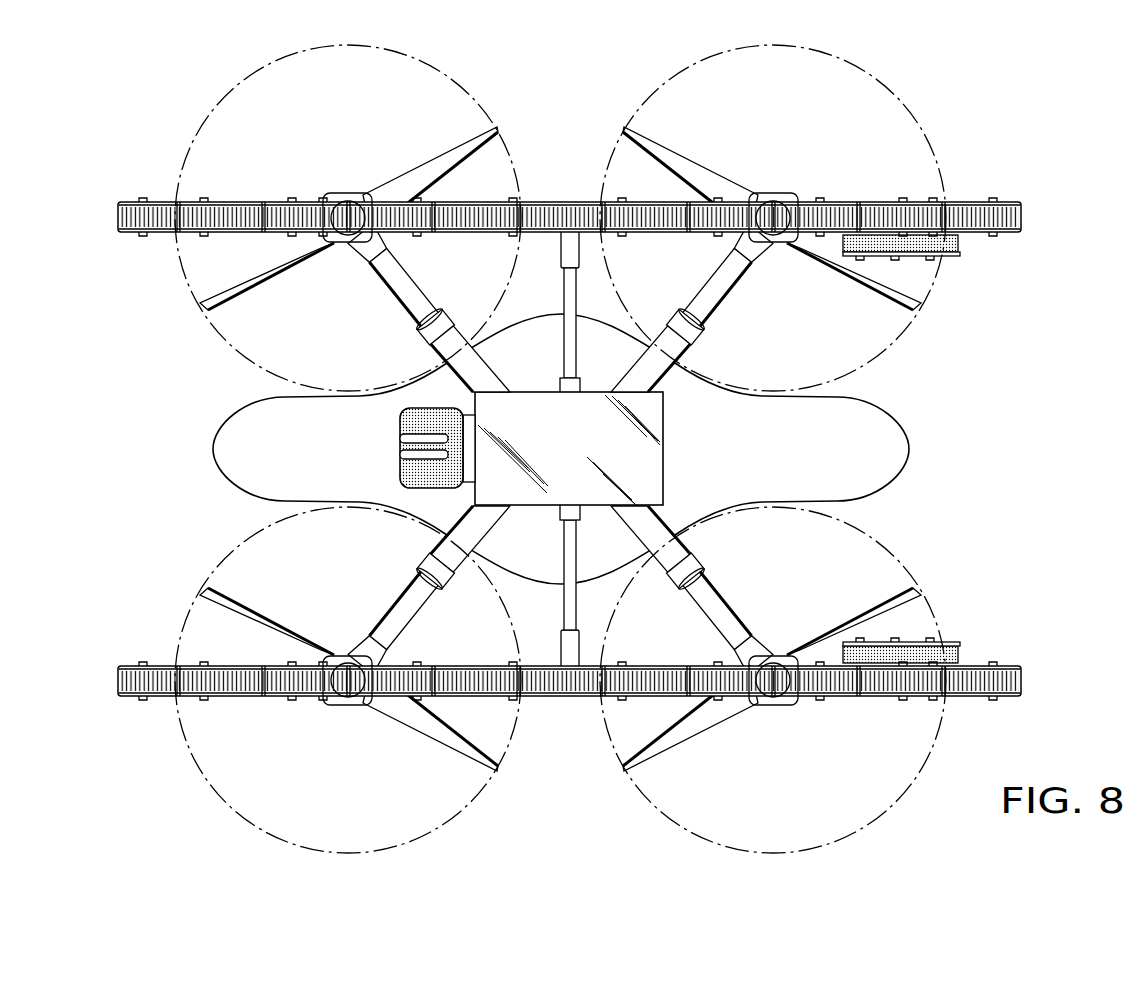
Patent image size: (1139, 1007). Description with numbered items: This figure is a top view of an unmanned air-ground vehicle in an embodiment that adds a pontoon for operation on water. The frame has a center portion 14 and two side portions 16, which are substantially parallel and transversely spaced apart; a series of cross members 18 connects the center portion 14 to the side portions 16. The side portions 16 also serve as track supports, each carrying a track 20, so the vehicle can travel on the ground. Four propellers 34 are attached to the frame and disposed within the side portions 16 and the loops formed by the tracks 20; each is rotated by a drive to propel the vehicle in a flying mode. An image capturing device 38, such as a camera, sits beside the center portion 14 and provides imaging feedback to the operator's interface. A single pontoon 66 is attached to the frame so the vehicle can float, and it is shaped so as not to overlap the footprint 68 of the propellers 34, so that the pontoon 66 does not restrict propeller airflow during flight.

The center portion 14 is at (578, 458).
The side portion 16 is at (592, 196).
The cross member 18 is at (432, 347).
The track 20 is at (1023, 210).
The propeller 34 is at (244, 296).
The image capturing device 38 is at (408, 412).
The pontoon 66 is at (904, 463).
The footprint 68 is at (463, 83).